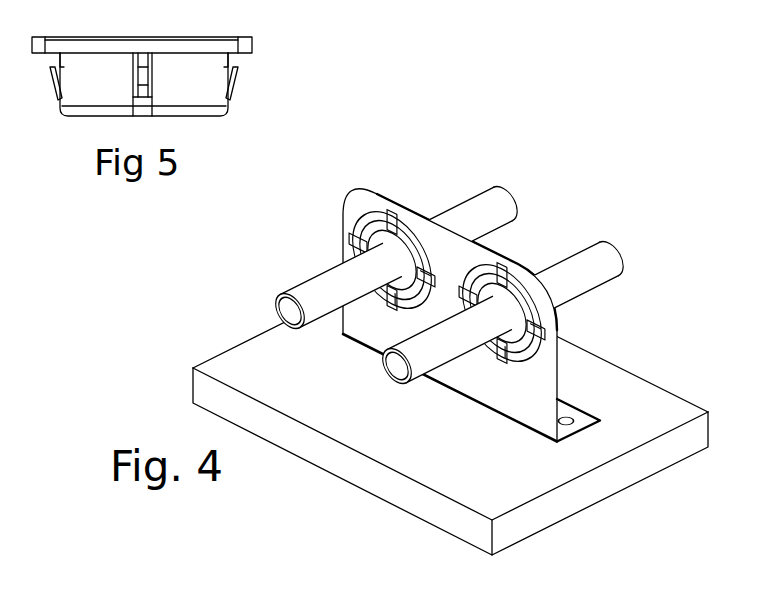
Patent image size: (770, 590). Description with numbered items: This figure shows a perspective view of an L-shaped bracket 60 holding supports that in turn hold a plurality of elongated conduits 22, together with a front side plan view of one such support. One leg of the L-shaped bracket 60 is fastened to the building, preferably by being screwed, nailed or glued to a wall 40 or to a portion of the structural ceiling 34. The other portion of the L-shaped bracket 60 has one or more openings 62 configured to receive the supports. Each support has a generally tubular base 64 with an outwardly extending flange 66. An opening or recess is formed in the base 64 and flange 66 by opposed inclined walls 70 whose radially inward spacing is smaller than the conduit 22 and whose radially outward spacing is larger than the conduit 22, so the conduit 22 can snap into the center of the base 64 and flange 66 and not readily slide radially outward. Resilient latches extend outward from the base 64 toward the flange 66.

In FIG. 4, the conduit 22 is at (513, 190).
In FIG. 4, the structural ceiling 34 is at (632, 388).
In FIG. 4, the wall 40 is at (481, 424).
In FIG. 4, the L-shaped bracket 60 is at (376, 193).
In FIG. 4, the openings 62 is at (494, 270).
In FIG. 5, the tubular base 64 is at (198, 100).
In FIG. 5, the flange 66 is at (253, 42).
In FIG. 5, the inclined walls 70 is at (228, 73).